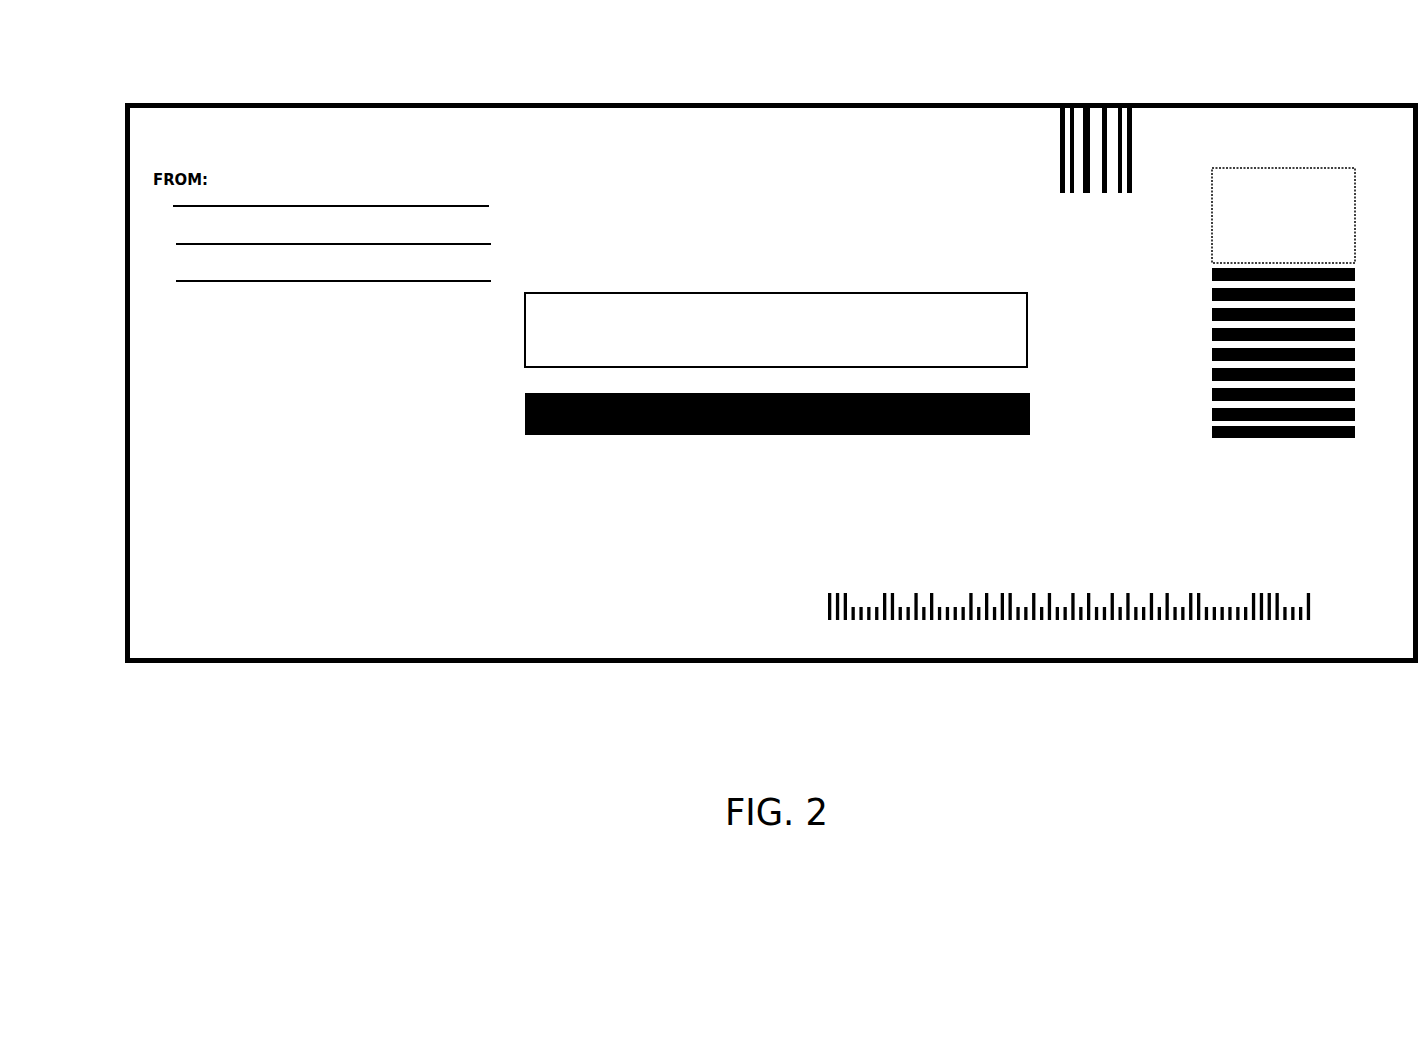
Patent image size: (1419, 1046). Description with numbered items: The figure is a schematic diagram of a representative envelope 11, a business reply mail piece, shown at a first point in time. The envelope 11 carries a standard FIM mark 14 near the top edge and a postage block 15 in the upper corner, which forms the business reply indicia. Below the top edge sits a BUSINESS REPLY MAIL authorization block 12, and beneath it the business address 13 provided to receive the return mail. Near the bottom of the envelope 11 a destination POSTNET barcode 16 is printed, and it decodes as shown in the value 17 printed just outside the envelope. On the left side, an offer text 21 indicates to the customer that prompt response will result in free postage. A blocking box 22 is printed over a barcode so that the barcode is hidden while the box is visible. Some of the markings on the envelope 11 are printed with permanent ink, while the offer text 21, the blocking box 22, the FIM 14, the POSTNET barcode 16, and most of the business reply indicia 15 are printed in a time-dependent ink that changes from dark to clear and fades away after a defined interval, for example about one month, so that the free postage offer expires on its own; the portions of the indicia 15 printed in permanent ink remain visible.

The envelope 11 is at (770, 105).
The BUSINESS REPLY MAIL authorization block 12 is at (700, 295).
The business address 13 is at (528, 540).
The FIM mark 14 is at (1098, 105).
The postage block 15 is at (1337, 177).
The destination POSTNET barcode 16 is at (826, 620).
The barcode decode 17 is at (1148, 728).
The offer text 21 is at (280, 450).
The blocking box 22 is at (1037, 418).